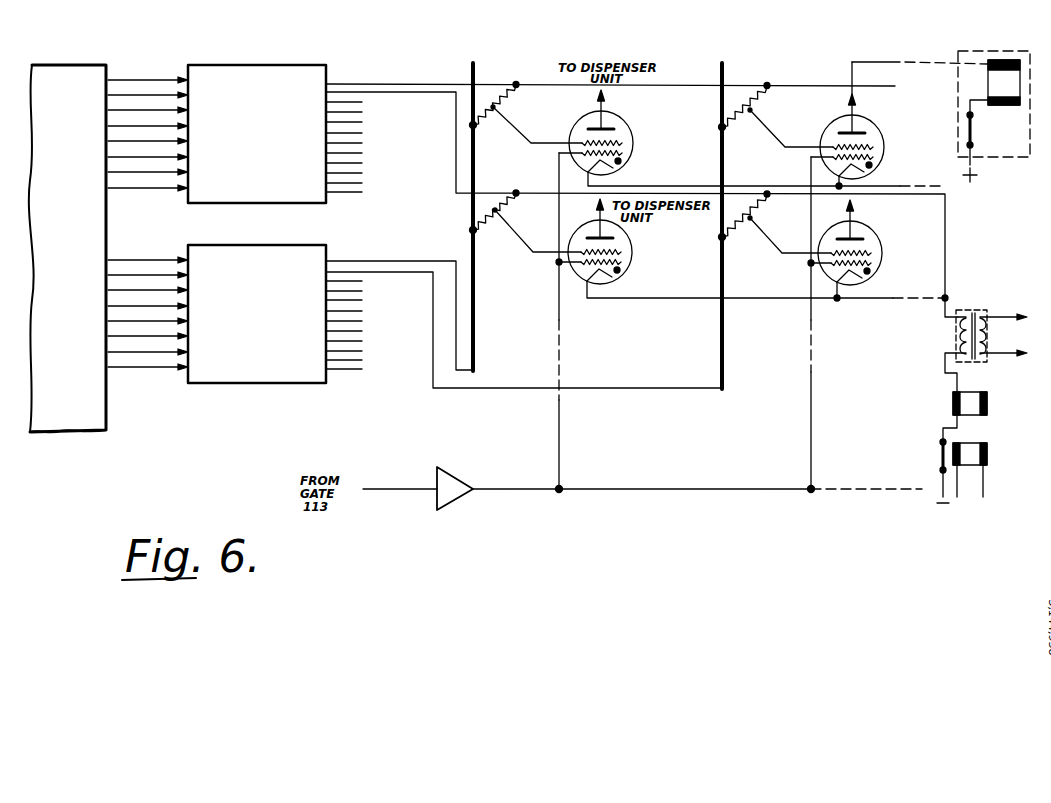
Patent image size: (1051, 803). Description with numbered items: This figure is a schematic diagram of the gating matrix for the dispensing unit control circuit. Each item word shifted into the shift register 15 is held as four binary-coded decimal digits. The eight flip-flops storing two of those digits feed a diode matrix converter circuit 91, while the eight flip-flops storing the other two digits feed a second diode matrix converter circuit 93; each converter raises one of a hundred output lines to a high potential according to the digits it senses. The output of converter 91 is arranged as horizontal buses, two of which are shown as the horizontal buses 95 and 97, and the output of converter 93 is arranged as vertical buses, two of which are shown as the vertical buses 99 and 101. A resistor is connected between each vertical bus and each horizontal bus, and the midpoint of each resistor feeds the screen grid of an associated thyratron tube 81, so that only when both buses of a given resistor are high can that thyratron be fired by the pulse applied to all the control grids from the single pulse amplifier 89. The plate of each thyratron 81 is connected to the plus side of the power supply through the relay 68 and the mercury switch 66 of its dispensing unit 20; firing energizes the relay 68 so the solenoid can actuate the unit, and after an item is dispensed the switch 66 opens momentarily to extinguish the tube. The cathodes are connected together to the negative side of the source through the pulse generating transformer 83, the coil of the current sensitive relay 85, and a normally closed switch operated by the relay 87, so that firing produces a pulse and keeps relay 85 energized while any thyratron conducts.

The shift register 15 is at (30, 150).
The dispensing unit 20 is at (977, 101).
The mercury switch 66 is at (968, 131).
The relay 68 is at (988, 81).
The thyratron tube 81 is at (632, 121).
The pulse generating transformer 83 is at (970, 310).
The current sensitive relay 85 is at (987, 393).
The relay 87 is at (969, 480).
The pulse amplifier 89 is at (471, 482).
The diode matrix converter circuit 91 is at (270, 65).
The diode matrix converter circuit 93 is at (287, 383).
The horizontal bus 95 is at (895, 86).
The horizontal bus 97 is at (877, 196).
The vertical bus 99 is at (475, 342).
The vertical bus 101 is at (724, 356).